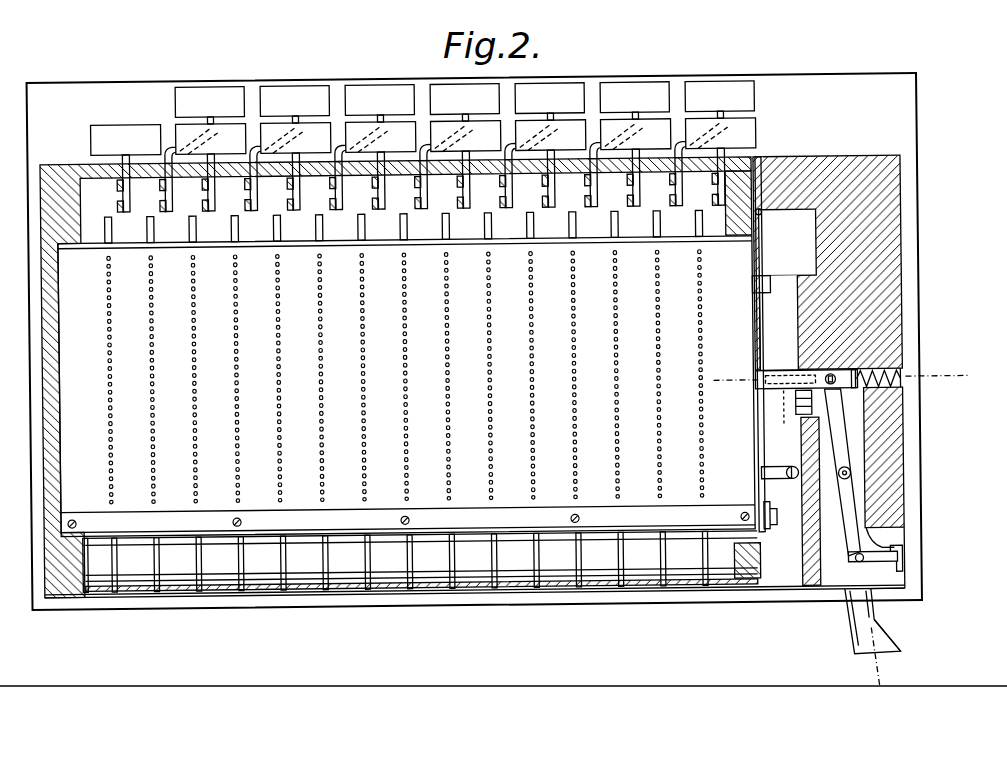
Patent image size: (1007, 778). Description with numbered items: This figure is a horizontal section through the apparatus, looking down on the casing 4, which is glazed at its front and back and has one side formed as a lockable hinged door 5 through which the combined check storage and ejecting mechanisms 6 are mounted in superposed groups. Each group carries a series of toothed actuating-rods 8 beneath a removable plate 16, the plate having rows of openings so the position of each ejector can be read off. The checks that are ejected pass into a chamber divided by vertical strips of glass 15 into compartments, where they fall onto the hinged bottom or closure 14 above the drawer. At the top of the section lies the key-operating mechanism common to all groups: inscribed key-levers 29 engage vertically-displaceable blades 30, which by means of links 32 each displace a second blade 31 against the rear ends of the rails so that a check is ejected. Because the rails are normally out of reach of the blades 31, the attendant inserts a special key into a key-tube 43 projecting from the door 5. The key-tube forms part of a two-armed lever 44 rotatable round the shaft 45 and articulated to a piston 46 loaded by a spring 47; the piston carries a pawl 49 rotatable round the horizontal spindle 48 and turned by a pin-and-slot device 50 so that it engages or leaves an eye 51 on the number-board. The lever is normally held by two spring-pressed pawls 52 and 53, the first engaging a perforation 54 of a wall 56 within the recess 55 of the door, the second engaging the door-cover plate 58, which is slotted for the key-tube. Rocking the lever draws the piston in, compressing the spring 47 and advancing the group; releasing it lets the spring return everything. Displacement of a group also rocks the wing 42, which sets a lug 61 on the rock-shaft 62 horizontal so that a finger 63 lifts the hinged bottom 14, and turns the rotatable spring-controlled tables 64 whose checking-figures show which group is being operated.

The casing 4 is at (432, 603).
The hinged door 5 is at (843, 170).
The combined check storage and ejecting mechanisms 6 is at (406, 386).
The toothed actuating-rods 8 is at (148, 226).
The closure 14 is at (318, 558).
The vertical strips of glass 15 is at (155, 556).
The removable plate 16 is at (312, 390).
The key-levers 29 is at (147, 134).
The vertically-displaceable blades 30 is at (132, 189).
The second blade 31 is at (262, 228).
The links 32 is at (174, 205).
The wing 42 is at (765, 232).
The key-tube 43 is at (890, 644).
The two-armed lever 44 is at (847, 526).
The shaft 45 is at (849, 477).
The piston 46 is at (859, 372).
The spring 47 is at (905, 386).
The horizontal spindle 48 is at (827, 372).
The pawl 49 is at (777, 331).
The pin-and-slot device 50 is at (774, 458).
The eye 51 is at (760, 398).
The pawl 52 is at (860, 572).
The locking-pawl 53 is at (866, 624).
The perforation 54 is at (905, 562).
The recess 55 is at (886, 547).
The wall 56 is at (843, 546).
The door-cover plate 58 is at (890, 593).
The lug 61 is at (766, 262).
The rock-shaft 62 is at (771, 294).
The finger 63 is at (765, 560).
The rotatable spring-controlled tables 64 is at (776, 514).